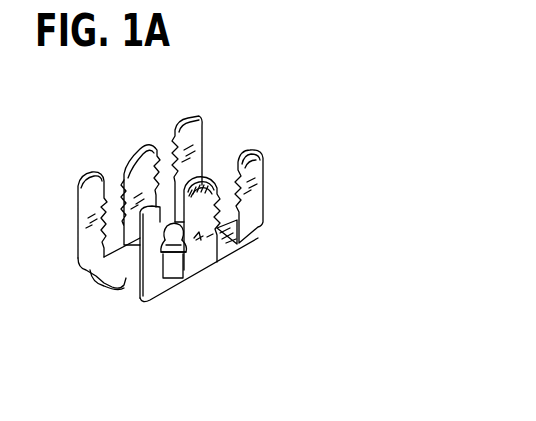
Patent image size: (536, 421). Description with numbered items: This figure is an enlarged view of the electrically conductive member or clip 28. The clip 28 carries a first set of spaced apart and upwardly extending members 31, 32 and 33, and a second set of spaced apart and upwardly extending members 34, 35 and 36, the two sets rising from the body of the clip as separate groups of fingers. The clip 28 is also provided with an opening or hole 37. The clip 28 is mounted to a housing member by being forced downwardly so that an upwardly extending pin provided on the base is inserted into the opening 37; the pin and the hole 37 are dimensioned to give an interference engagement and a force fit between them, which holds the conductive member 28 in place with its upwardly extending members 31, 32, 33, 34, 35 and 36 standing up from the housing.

The electrically conductive member or clip 28 is at (268, 224).
The upwardly extending member 31 is at (250, 146).
The upwardly extending member 32 is at (200, 232).
The upwardly extending member 33 is at (130, 292).
The upwardly extending member 34 is at (186, 114).
The upwardly extending member 35 is at (141, 140).
The upwardly extending member 36 is at (86, 171).
The opening 37 is at (170, 283).